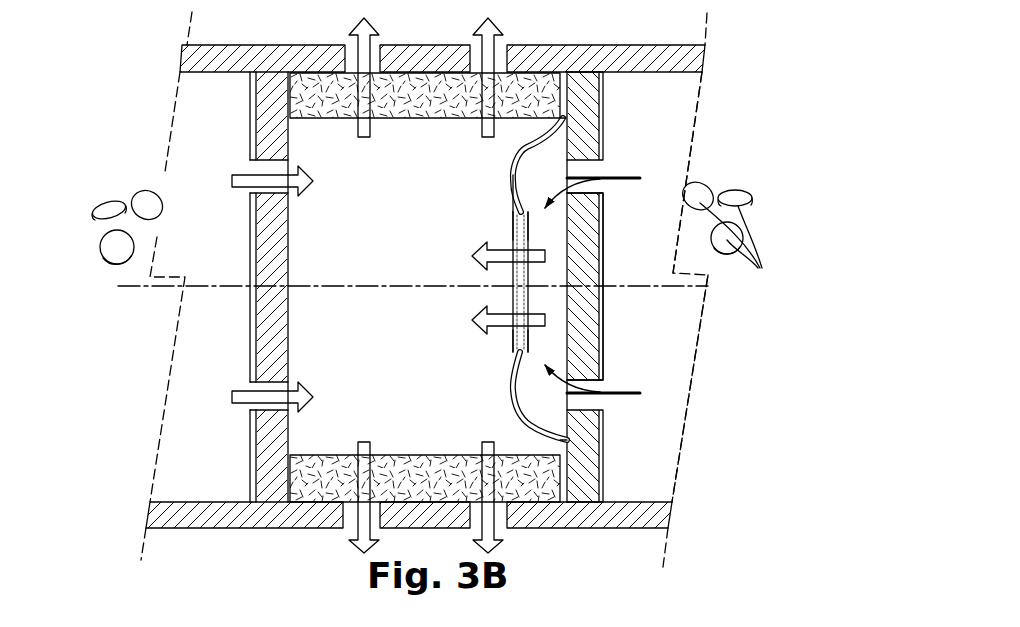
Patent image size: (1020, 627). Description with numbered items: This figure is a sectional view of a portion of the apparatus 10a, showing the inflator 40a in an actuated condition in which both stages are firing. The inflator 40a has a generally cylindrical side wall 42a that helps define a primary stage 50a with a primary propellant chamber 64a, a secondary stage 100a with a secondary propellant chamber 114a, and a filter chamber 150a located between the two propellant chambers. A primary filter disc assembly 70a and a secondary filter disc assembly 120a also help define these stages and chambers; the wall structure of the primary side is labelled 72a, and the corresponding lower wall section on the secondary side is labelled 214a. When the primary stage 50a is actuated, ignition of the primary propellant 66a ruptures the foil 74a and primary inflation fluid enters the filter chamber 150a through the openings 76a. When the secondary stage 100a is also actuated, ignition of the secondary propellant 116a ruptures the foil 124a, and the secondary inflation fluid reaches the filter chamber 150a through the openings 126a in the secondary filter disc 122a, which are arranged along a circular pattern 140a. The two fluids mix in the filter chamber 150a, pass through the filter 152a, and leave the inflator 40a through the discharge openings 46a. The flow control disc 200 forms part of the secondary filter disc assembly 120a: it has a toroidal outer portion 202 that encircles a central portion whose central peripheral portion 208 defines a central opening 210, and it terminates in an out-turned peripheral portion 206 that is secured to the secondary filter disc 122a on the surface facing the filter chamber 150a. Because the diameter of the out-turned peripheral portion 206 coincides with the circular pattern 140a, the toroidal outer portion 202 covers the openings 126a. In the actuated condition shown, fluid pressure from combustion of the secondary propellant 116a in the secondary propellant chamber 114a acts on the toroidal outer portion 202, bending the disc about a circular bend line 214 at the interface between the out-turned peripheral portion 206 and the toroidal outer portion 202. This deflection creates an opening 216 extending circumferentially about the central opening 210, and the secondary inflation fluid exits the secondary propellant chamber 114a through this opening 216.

The apparatus 10a is at (120, 116).
The inflator 40a is at (120, 116).
The side wall 42a is at (228, 62).
The discharge openings 46a is at (470, 60).
The primary stage 50a is at (143, 418).
The primary propellant chamber 64a is at (236, 157).
The primary propellant 66a is at (147, 207).
The primary filter disc assembly 70a is at (208, 337).
The inlet side wall 72a is at (273, 310).
The foil 74a is at (250, 277).
The openings 76a is at (277, 191).
The secondary stage 100a is at (653, 408).
The secondary propellant chamber 114a is at (682, 127).
The secondary propellant 116a is at (708, 284).
The secondary filter disc assembly 120a is at (627, 303).
The secondary filter disc 122a is at (578, 278).
The foil 124a is at (598, 242).
The openings 126a is at (580, 170).
The circular pattern 140a is at (608, 165).
The filter chamber 150a is at (372, 247).
The filter 152a is at (413, 100).
The flow control disc 200 is at (510, 178).
The toroidal outer portion 202 is at (527, 148).
The out-turned peripheral portion 206 is at (560, 122).
The central peripheral portion 208 is at (512, 353).
The central opening 210 is at (512, 292).
The circular bend line 214 is at (568, 133).
The lower wall section 214a is at (570, 433).
The opening 216 is at (545, 233).